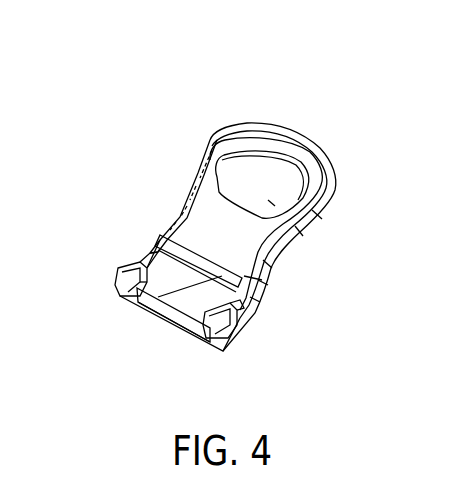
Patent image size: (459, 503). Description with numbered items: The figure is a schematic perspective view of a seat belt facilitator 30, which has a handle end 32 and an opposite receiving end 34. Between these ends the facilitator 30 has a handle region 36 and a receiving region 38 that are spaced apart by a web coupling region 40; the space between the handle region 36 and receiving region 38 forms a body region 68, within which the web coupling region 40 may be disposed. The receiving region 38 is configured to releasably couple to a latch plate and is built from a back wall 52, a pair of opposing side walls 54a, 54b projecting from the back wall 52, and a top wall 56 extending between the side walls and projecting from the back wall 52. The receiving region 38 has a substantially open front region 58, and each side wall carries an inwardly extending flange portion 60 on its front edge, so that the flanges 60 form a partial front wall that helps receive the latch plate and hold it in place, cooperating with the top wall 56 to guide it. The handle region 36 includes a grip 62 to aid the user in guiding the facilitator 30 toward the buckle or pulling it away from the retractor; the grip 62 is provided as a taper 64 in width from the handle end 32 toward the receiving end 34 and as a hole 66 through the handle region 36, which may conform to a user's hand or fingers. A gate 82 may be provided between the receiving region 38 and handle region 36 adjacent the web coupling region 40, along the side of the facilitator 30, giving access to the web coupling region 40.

The facilitator 30 is at (211, 220).
The handle end 32 is at (260, 201).
The receiving end 34 is at (179, 314).
The handle region 36 is at (273, 237).
The receiving region 38 is at (232, 361).
The web coupling region 40 is at (208, 254).
The back wall 52 is at (177, 330).
The side wall 54a is at (227, 325).
The side wall 54b is at (120, 293).
The top wall 56 is at (262, 272).
The front region 58 is at (153, 281).
The flange portion 60 is at (120, 280).
The grip 62 is at (266, 224).
The taper 64 is at (316, 233).
The hole 66 is at (254, 175).
The body region 68 is at (288, 256).
The gate 82 is at (161, 226).